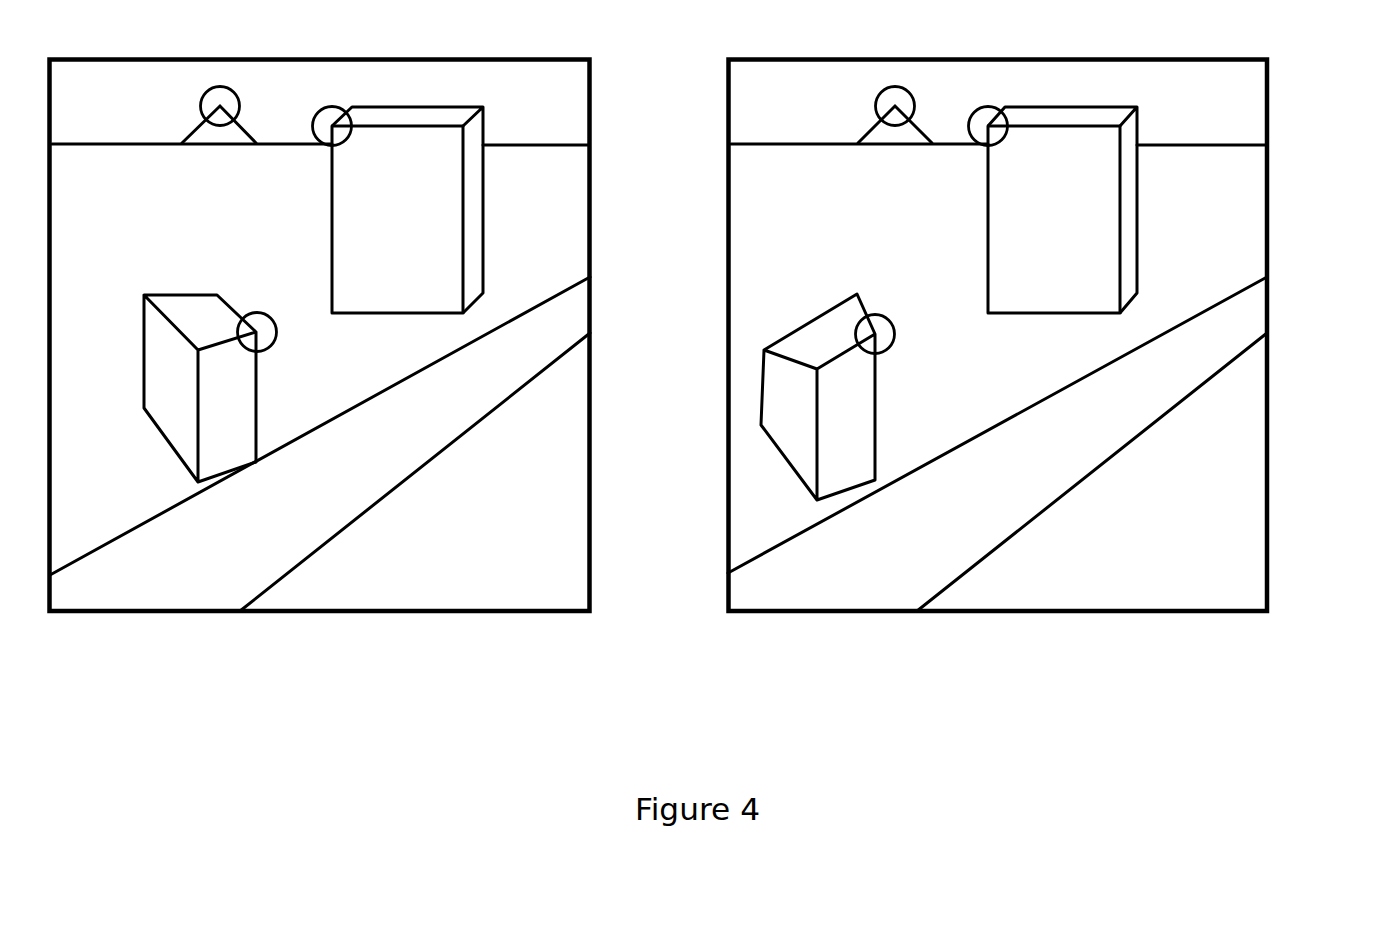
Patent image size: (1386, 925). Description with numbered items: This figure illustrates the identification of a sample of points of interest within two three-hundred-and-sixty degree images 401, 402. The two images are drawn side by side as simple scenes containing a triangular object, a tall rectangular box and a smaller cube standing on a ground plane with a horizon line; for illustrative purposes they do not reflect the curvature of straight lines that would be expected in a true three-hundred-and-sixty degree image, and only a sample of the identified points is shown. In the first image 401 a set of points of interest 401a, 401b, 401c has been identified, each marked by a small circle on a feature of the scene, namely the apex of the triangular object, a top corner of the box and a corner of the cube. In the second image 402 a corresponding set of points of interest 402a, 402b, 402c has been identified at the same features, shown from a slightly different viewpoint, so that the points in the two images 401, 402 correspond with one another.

The 360 degree image 401 is at (592, 110).
The point of interest 401a is at (203, 114).
The point of interest 401b is at (388, 199).
The point of interest 401c is at (237, 388).
The 360 degree image 402 is at (1269, 110).
The corresponding point of interest 402a is at (875, 114).
The corresponding point of interest 402b is at (1034, 199).
The corresponding point of interest 402c is at (854, 397).